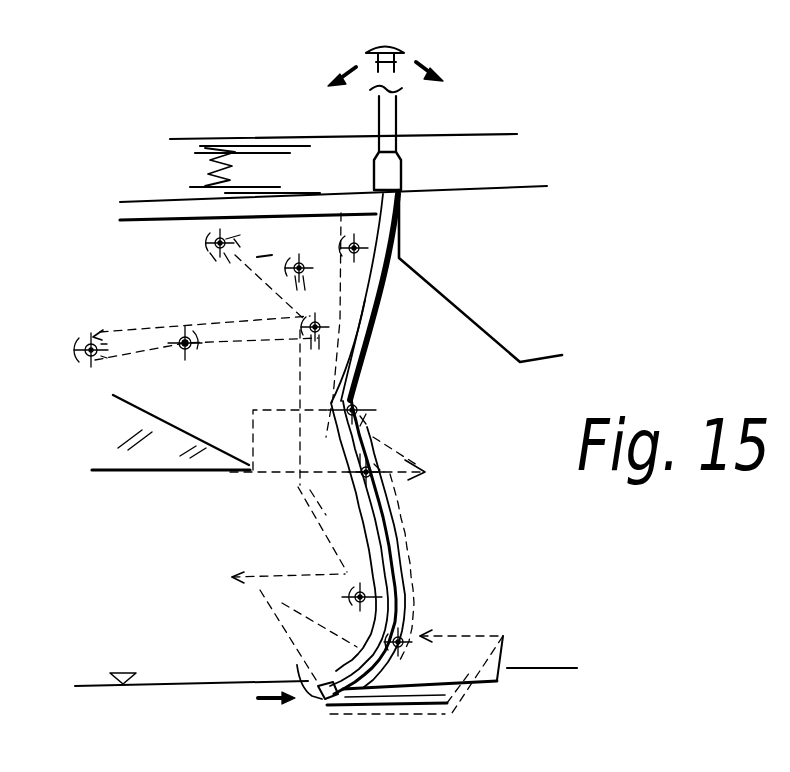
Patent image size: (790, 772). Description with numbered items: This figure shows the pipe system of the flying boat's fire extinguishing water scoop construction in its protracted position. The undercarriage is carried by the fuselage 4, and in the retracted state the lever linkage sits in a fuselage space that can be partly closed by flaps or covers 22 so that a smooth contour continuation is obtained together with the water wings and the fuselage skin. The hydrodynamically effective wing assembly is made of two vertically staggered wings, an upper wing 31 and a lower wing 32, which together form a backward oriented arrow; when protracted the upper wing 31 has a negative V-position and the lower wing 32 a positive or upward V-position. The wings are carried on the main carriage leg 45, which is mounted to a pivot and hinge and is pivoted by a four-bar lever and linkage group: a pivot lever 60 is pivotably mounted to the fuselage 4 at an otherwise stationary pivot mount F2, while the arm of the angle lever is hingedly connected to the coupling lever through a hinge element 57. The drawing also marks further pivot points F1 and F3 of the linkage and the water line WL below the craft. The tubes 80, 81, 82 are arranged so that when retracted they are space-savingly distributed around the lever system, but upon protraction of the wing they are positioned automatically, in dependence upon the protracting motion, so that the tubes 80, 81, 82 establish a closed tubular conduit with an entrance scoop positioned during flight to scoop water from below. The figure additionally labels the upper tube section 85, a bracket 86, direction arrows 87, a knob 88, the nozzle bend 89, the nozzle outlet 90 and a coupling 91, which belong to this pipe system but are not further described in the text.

The fuselage 4 is at (143, 450).
The flaps or covers 22 is at (400, 462).
The upper wing 31 is at (500, 636).
The lower wing 32 is at (270, 618).
The main carriage leg 45 is at (305, 380).
The hinge element 57 is at (190, 358).
The pivot lever 60 is at (276, 308).
The tube 80 is at (372, 327).
The tube 81 is at (405, 556).
The tube 82 is at (395, 690).
The upper tube section 85 is at (392, 152).
The bracket 86 is at (400, 225).
The direction arrows 87 is at (367, 55).
The knob 88 is at (405, 57).
The nozzle bend 89 is at (300, 680).
The nozzle outlet 90 is at (350, 708).
The coupling 91 is at (402, 178).
The pivot F1 is at (78, 362).
The stationary pivot mount F2 is at (206, 247).
The pivot F3 is at (348, 256).
The water line WL is at (186, 706).